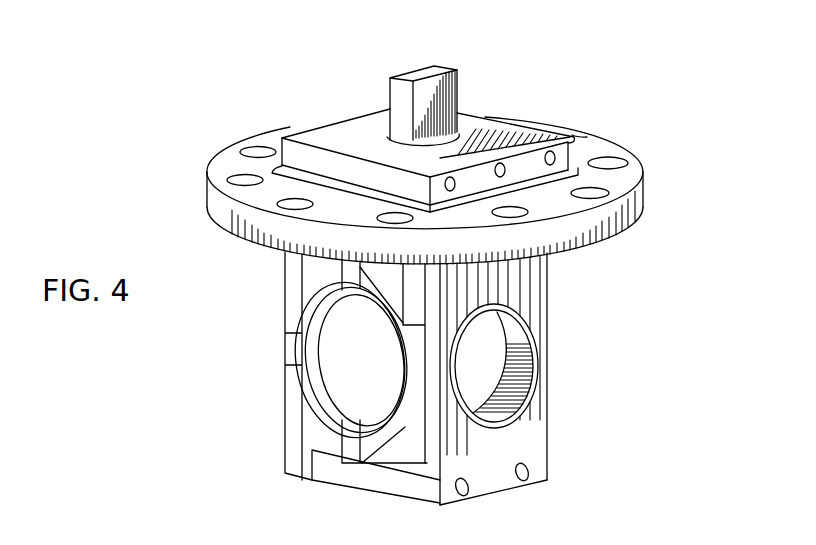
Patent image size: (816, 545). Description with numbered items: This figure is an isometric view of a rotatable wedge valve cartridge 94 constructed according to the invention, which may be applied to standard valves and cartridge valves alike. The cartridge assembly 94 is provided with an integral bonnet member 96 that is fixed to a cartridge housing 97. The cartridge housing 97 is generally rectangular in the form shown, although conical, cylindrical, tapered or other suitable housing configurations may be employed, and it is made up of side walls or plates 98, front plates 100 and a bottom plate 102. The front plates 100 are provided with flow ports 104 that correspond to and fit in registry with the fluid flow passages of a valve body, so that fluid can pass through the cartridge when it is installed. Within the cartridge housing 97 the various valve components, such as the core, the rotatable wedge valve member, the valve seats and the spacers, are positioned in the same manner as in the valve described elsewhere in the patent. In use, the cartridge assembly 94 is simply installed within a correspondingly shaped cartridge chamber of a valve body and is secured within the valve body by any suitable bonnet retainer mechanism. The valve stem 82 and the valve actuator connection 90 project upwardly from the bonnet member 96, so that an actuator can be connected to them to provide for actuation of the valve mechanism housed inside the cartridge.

The valve stem 82 is at (296, 112).
The valve actuator connection 90 is at (410, 70).
The bonnet member 96 is at (607, 143).
The rotatable wedge valve cartridge 94 is at (706, 270).
The front plates 100 is at (532, 280).
The flow ports 104 is at (497, 358).
The cartridge housing 97 is at (280, 393).
The side walls or plates 98 is at (373, 478).
The bottom plate 102 is at (488, 495).